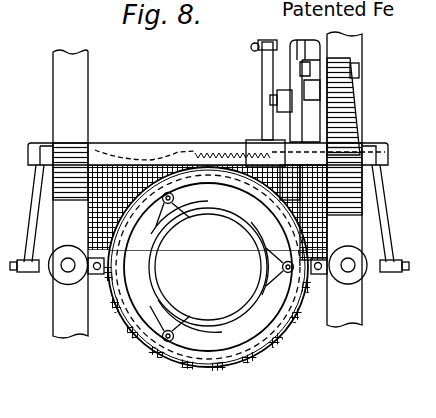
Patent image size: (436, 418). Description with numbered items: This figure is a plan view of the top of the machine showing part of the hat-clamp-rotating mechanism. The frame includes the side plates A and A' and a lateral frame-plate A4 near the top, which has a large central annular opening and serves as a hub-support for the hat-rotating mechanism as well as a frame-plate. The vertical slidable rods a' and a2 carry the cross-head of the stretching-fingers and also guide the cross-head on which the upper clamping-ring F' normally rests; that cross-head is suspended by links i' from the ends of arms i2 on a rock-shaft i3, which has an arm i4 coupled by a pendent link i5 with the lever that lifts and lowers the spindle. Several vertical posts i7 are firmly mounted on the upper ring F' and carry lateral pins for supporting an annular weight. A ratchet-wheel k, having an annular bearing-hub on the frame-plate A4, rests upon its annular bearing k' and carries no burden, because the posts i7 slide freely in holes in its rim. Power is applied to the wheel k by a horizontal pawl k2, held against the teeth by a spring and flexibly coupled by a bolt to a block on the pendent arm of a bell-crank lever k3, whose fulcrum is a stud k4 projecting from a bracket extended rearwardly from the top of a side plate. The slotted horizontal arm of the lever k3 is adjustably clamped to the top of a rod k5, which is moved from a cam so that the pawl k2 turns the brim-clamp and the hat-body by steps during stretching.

The side plate A is at (75, 208).
The side plate A' is at (336, 193).
The lateral frame-plate A4 is at (126, 190).
The vertical slidable rod a' is at (68, 256).
The vertical slidable rod a2 is at (348, 268).
The link i' is at (209, 287).
The arm or lever i2 is at (30, 221).
The rock-shaft i3 is at (158, 148).
The arm i4 is at (262, 123).
The pendent link i5 is at (251, 48).
The vertical rod or post i7 is at (176, 196).
The upper clamping-ring F' is at (208, 266).
The ratchet-wheel k is at (208, 283).
The annular bearing k' is at (208, 287).
The horizontal pawl k2 is at (336, 162).
The bell-crank lever k3 is at (306, 118).
The stud k4 is at (356, 72).
The rod k5 is at (284, 101).